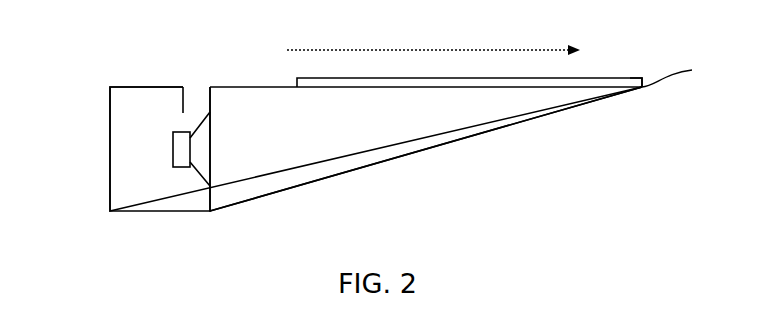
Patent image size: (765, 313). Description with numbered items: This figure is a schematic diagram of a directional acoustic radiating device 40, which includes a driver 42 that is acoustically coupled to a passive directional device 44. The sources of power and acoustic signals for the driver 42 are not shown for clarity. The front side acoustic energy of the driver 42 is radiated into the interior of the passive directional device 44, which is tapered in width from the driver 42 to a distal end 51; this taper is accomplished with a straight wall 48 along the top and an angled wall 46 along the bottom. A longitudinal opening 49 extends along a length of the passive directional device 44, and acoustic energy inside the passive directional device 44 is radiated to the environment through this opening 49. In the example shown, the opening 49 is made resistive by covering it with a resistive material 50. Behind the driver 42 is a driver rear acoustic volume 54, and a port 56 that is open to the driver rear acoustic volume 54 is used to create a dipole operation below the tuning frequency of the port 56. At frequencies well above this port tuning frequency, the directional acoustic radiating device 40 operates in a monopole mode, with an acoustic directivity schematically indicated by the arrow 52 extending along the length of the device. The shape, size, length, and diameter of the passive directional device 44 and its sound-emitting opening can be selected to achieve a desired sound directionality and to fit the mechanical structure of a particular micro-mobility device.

The directional acoustic radiating device 40 is at (121, 229).
The driver 42 is at (200, 152).
The passive directional device 44 is at (422, 160).
The angled wall 46 is at (485, 133).
The straight wall 48 is at (260, 87).
The longitudinal opening 49 is at (420, 88).
The resistive material 50 is at (632, 78).
The distal end 51 is at (680, 72).
The arrow 52 is at (437, 50).
The driver rear acoustic volume 54 is at (110, 157).
The port 56 is at (199, 97).